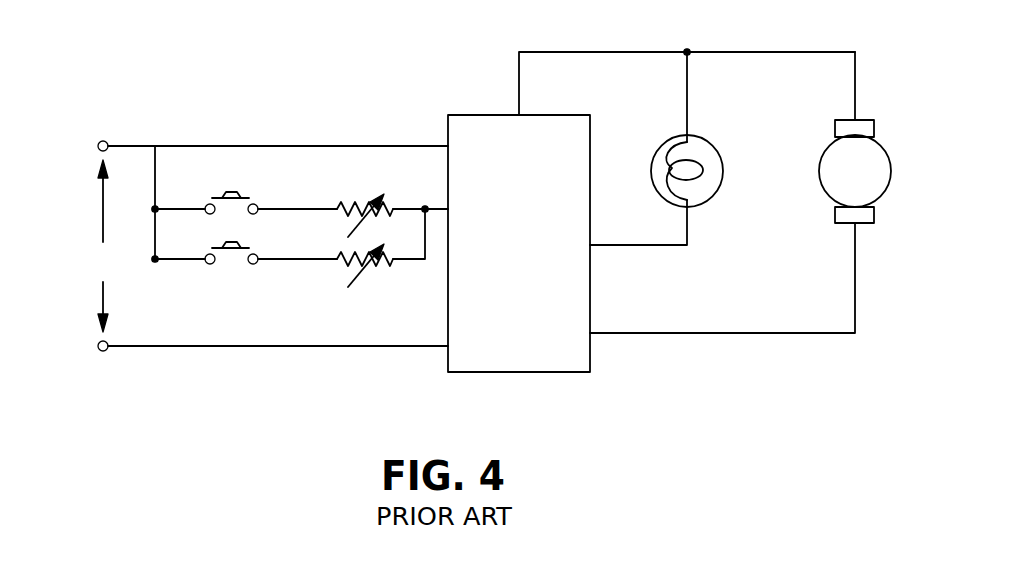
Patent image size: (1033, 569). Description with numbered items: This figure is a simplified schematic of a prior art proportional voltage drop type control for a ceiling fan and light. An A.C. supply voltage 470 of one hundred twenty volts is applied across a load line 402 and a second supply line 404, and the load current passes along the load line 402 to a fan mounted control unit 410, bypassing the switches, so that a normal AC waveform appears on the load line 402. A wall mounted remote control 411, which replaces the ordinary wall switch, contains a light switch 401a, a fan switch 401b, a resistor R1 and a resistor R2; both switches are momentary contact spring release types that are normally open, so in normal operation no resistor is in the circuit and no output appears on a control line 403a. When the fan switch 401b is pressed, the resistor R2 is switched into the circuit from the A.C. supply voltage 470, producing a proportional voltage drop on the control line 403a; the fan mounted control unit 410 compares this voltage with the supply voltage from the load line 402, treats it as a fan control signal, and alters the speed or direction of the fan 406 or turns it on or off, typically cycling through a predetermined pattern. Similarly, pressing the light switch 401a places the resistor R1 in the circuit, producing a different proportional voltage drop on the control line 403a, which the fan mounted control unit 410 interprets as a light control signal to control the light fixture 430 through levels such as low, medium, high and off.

The load line 402 is at (110, 145).
The second power input line 404 is at (163, 347).
The A.C. supply voltage 470 is at (102, 213).
The wall mounted remote control 411 is at (285, 170).
The light switch 401a is at (232, 190).
The fan switch 401b is at (230, 265).
The resistor R1 is at (365, 201).
The resistor R2 is at (365, 274).
The control line 403a is at (435, 214).
The fan mounted control unit 410 is at (590, 352).
The light fixture 430 is at (715, 148).
The fan 406 is at (888, 155).